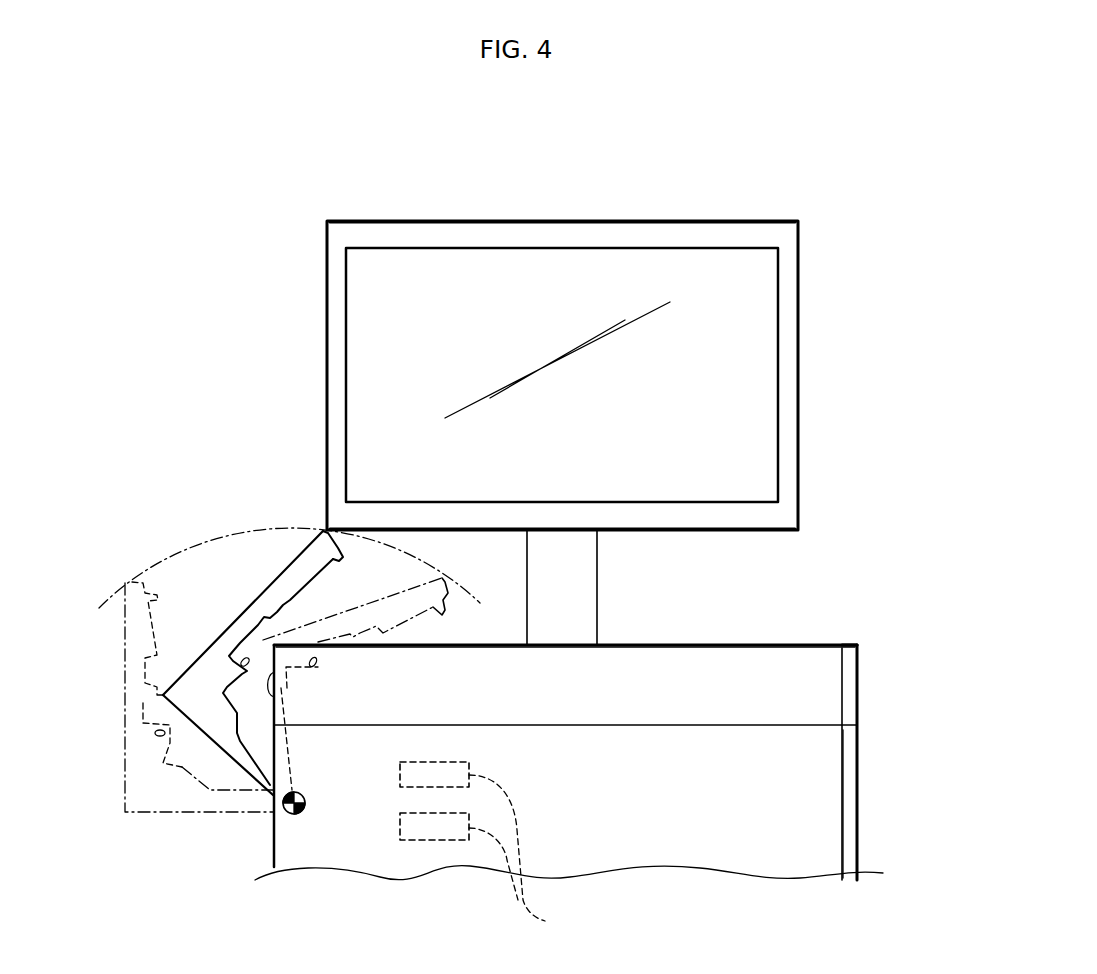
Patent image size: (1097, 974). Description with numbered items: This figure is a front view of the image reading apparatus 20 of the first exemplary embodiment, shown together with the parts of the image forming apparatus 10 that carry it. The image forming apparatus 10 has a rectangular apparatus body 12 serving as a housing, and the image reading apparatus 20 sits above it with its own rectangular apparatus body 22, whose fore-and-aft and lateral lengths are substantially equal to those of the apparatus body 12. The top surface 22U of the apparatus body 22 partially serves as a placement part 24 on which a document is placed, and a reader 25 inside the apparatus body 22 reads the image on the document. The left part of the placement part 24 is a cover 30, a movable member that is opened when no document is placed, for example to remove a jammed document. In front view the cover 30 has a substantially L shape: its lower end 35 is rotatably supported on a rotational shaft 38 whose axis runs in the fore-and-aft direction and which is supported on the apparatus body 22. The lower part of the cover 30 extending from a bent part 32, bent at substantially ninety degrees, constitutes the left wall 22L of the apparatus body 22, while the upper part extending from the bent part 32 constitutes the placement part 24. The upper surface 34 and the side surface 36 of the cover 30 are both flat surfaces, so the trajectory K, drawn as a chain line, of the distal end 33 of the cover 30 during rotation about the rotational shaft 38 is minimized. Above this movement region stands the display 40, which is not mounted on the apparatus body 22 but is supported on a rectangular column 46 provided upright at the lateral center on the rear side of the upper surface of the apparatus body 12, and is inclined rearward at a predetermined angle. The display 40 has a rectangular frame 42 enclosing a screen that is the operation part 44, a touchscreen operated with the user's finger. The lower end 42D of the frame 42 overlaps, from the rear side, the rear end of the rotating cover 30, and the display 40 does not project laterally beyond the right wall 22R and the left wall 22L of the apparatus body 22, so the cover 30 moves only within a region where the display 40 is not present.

The image forming apparatus 10 is at (875, 846).
The apparatus body 12 is at (858, 778).
The image reading apparatus 20 is at (861, 640).
The apparatus body 22 is at (862, 692).
The top surface 22U is at (818, 645).
The right wall 22R is at (858, 702).
The left wall 22L is at (286, 687).
The placement part 24 is at (778, 644).
The reader 25 is at (540, 913).
The cover 30 is at (210, 643).
The bent part 32 is at (160, 695).
The distal end 33 is at (322, 530).
The upper surface 34 is at (252, 602).
The lower end 35 is at (270, 806).
The side surface 36 is at (220, 745).
The rotational shaft 38 is at (305, 804).
The display 40 is at (803, 219).
The frame 42 is at (588, 234).
The lower end 42D is at (483, 518).
The operation part 44 is at (747, 390).
The column 46 is at (567, 577).
The trajectory K is at (187, 547).